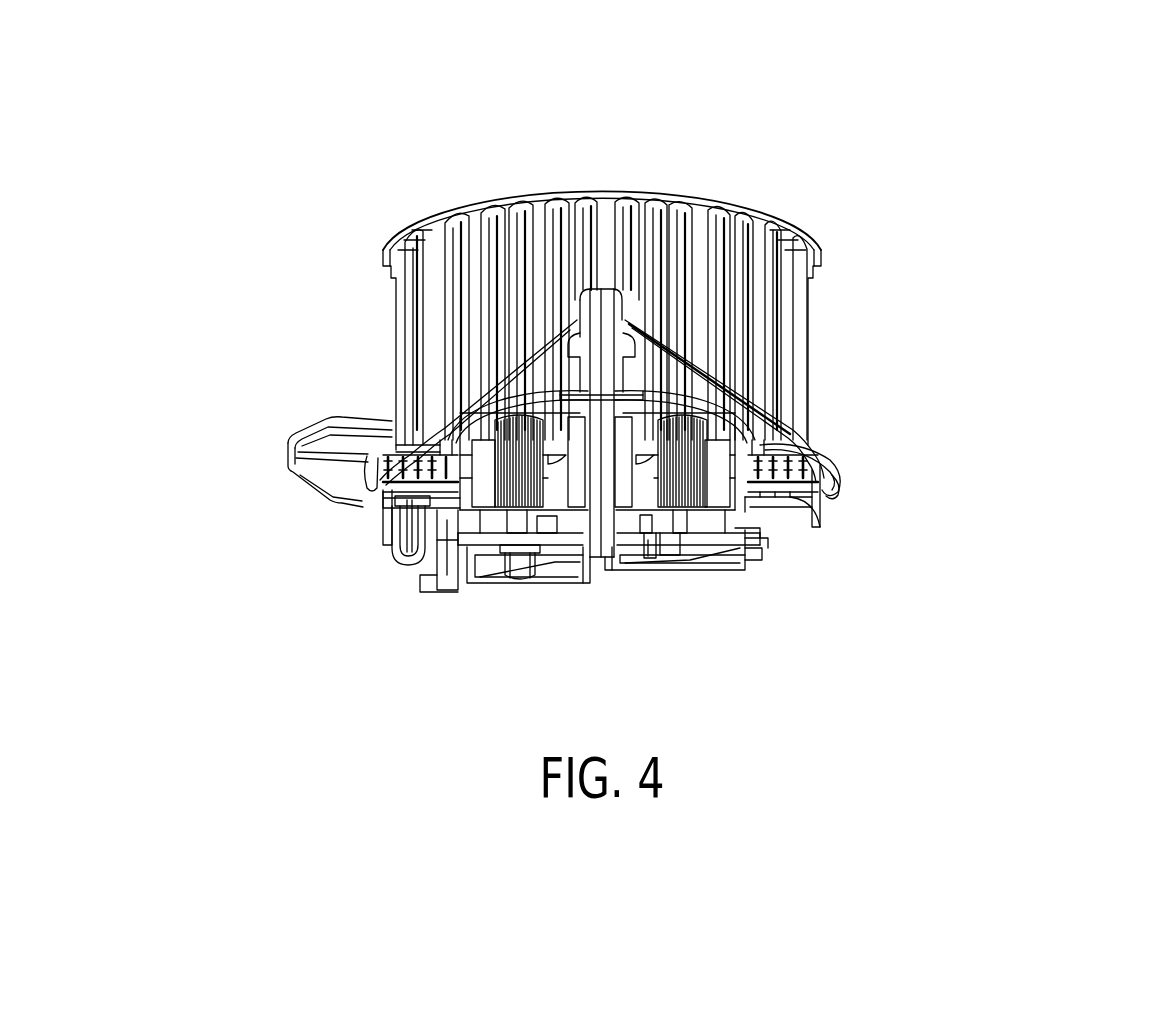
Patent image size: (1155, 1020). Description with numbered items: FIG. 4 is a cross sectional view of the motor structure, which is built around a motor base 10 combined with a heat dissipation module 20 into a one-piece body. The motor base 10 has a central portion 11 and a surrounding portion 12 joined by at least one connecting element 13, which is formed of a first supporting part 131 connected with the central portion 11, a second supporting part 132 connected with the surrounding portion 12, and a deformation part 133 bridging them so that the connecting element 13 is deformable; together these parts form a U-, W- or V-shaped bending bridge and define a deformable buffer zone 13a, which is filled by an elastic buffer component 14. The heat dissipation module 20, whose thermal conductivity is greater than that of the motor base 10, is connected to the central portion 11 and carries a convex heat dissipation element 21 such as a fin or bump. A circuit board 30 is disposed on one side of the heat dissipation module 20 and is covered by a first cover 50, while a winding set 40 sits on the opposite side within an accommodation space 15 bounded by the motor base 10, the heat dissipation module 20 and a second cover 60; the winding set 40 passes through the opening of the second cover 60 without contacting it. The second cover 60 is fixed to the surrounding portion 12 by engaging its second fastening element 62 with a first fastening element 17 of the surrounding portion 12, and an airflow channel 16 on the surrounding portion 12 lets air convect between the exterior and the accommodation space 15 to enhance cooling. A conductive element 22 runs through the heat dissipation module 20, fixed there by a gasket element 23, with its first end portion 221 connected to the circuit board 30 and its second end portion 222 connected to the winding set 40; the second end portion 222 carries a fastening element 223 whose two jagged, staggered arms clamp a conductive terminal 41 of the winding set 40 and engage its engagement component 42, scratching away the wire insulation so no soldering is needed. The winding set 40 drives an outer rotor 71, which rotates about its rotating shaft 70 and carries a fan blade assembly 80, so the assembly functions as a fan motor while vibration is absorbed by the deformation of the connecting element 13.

The motor base 10 is at (820, 512).
The central portion 11 is at (435, 592).
The surrounding portion 12 is at (373, 498).
The connecting element 13 is at (307, 567).
The buffer zone 13a is at (333, 442).
The first supporting part 131 is at (425, 578).
The second supporting part 132 is at (395, 538).
The deformation part 133 is at (403, 560).
The buffer component 14 is at (390, 522).
The accommodation space 15 is at (440, 425).
The airflow channel 16 is at (360, 442).
The first fastening element 17 is at (826, 452).
The heat dissipation module 20 is at (548, 541).
The heat dissipation element 21 is at (517, 533).
The conductive element 22 is at (723, 553).
The first end portion 221 is at (667, 553).
The second end portion 222 is at (650, 547).
The fastening element 223 is at (600, 392).
The gasket element 23 is at (617, 553).
The circuit board 30 is at (523, 560).
The winding set 40 is at (705, 400).
The conductive terminal 41 is at (752, 545).
The engagement component 42 is at (748, 530).
The first cover 50 is at (747, 560).
The second cover 60 is at (782, 455).
The second fastening element 62 is at (840, 474).
The rotating shaft 70 is at (612, 312).
The rotor 71 is at (640, 343).
The fan blade assembly 80 is at (818, 247).